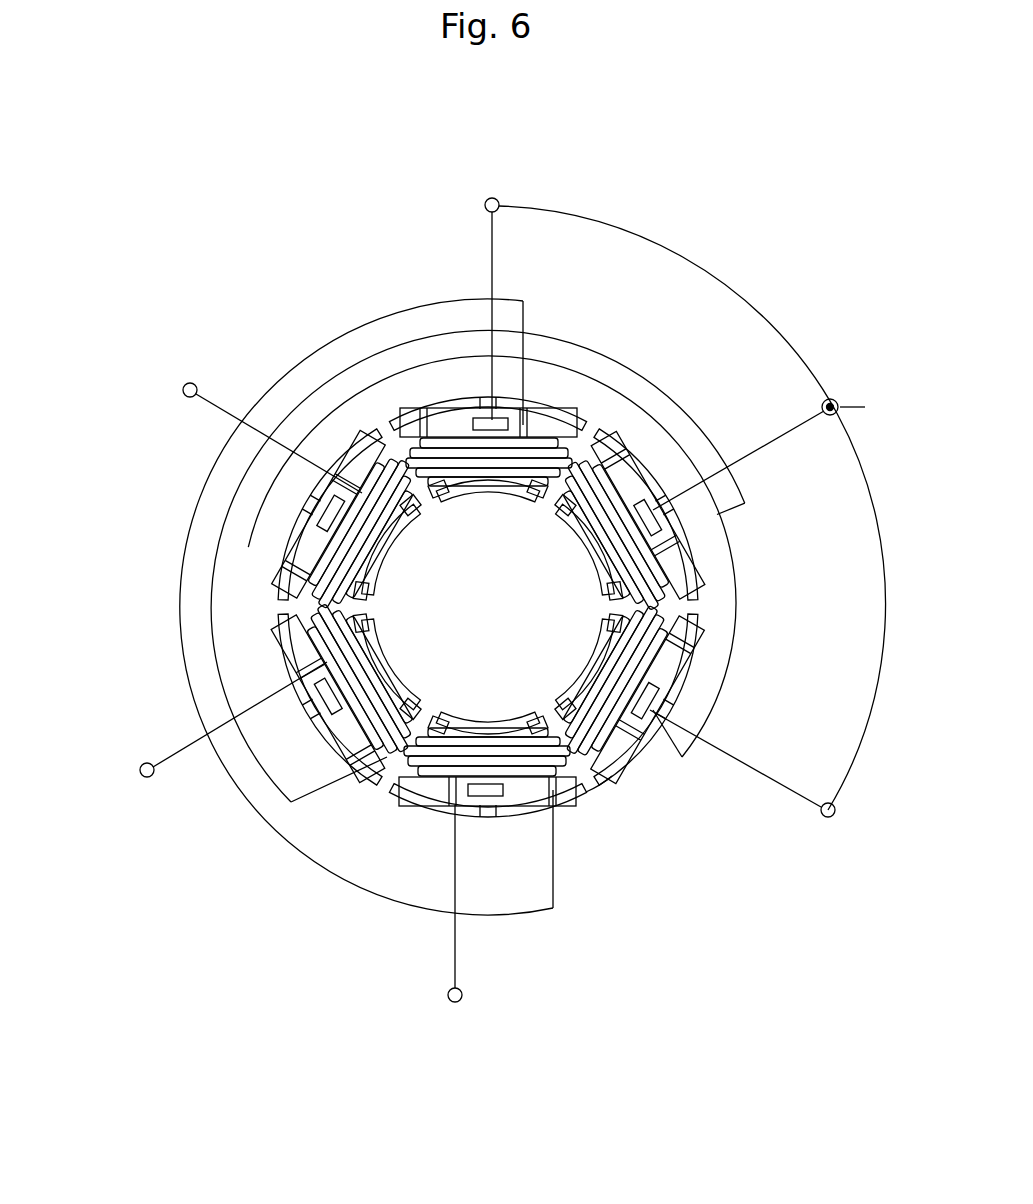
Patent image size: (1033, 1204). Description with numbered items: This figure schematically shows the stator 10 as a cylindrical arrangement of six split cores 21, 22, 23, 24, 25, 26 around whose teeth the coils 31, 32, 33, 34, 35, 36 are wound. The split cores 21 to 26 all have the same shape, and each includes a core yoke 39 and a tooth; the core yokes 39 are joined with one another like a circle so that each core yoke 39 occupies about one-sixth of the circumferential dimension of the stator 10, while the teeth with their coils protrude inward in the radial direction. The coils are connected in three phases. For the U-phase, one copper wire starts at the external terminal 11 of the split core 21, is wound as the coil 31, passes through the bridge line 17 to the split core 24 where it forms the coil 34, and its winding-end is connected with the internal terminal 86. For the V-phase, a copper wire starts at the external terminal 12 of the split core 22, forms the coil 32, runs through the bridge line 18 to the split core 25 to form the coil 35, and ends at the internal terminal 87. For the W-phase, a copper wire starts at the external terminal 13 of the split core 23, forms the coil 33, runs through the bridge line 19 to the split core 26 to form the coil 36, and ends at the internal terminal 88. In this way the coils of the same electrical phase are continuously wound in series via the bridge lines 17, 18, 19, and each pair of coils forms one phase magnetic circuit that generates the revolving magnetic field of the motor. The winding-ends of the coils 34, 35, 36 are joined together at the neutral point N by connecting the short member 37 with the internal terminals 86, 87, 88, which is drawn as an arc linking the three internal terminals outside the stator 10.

The stator 10 is at (258, 291).
The external terminal 11 is at (463, 995).
The external terminal 12 is at (148, 790).
The external terminal 13 is at (185, 398).
The bridge line 17 is at (328, 870).
The bridge line 18 is at (670, 396).
The bridge line 19 is at (733, 598).
The split core 21 is at (487, 718).
The split core 22 is at (392, 665).
The split core 23 is at (388, 556).
The split core 24 is at (487, 500).
The split core 25 is at (580, 552).
The split core 26 is at (585, 660).
The coil 31 is at (442, 758).
The coil 32 is at (373, 715).
The coil 33 is at (345, 548).
The coil 34 is at (526, 455).
The coil 35 is at (635, 565).
The coil 36 is at (640, 655).
The short member 37 is at (875, 512).
The core yoke 39 is at (580, 787).
The internal terminal 86 is at (485, 203).
The internal terminal 87 is at (831, 399).
The internal terminal 88 is at (836, 816).